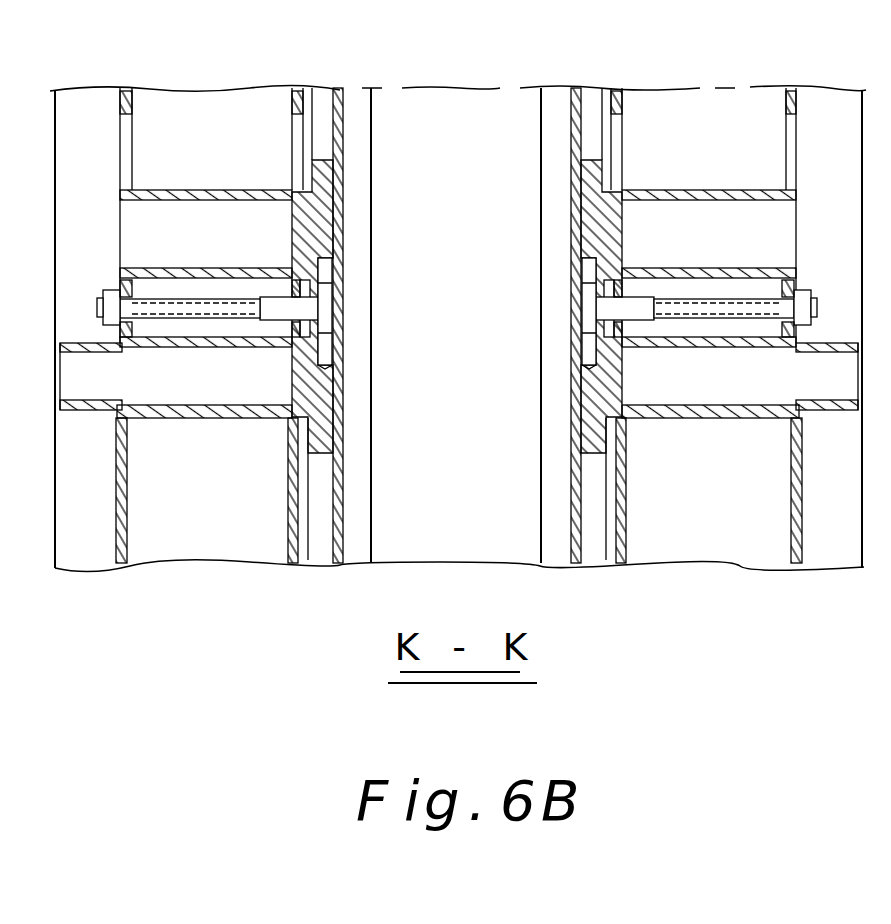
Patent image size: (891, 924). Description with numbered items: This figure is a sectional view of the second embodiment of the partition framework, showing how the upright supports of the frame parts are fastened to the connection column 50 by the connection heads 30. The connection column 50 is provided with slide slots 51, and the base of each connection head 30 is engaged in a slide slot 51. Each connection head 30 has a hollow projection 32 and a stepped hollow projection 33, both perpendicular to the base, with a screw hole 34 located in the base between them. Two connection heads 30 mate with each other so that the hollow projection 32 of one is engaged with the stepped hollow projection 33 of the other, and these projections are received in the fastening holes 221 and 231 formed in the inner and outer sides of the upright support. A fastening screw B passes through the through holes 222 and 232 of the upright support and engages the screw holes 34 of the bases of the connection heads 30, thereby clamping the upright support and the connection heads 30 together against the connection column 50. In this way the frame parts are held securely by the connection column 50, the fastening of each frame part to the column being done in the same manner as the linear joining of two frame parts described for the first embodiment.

The fastening hole 221 is at (131, 137).
The fastening hole 231 is at (293, 140).
The slide slot 51 is at (323, 106).
The connection column 50 is at (452, 101).
The hollow projection 32 is at (207, 193).
The connection head 30 is at (326, 222).
The fastening screw B is at (328, 294).
The screw hole 34 is at (340, 366).
The through hole 222 is at (135, 330).
The through hole 232 is at (284, 331).
The stepped hollow projection 33 is at (217, 410).